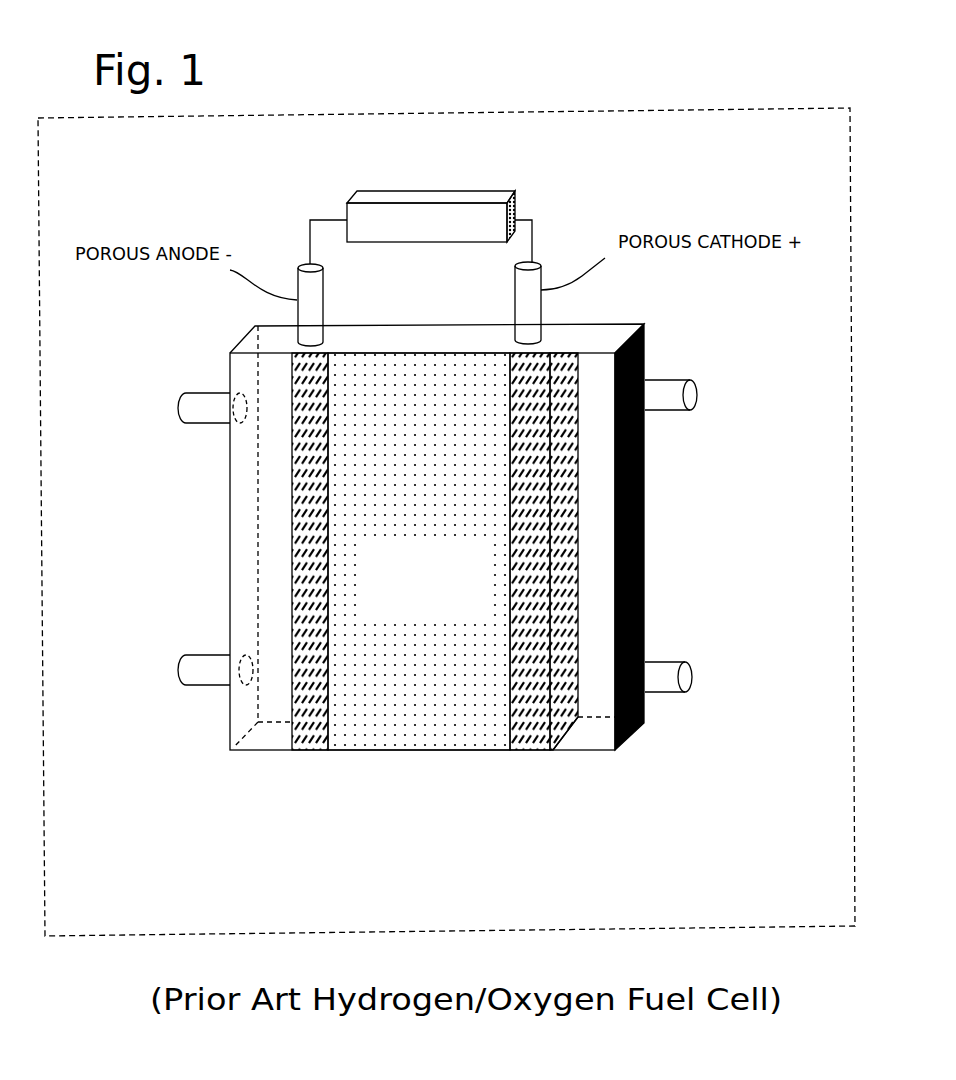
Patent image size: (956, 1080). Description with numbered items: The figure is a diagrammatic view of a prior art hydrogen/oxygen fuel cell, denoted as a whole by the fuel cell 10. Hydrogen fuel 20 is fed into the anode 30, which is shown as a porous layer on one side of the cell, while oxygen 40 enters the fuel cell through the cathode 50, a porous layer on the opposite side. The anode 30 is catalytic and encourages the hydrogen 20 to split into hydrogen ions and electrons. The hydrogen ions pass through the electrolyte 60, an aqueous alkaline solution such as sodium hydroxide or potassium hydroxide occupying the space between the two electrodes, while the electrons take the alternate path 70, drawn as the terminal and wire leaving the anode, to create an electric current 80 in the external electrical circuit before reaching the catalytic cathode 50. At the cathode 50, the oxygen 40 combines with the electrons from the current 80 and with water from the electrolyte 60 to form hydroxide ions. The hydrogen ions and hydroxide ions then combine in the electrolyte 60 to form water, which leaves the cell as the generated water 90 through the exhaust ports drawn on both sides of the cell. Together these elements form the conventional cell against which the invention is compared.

The prior art fuel cell 10 is at (583, 112).
The hydrogen fuel 20 is at (150, 432).
The anode 30 is at (315, 752).
The oxygen 40 is at (745, 415).
The cathode 50 is at (532, 752).
The electrolyte 60 is at (418, 752).
The alternate path 70 is at (303, 231).
The electric current 80 is at (413, 191).
The generated water 90 is at (122, 657).